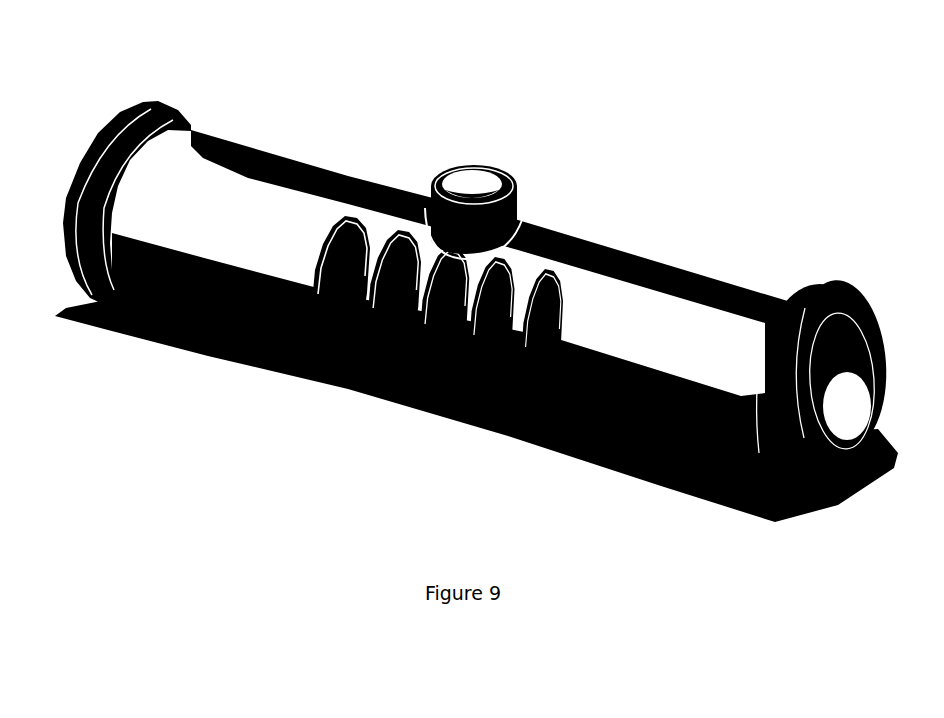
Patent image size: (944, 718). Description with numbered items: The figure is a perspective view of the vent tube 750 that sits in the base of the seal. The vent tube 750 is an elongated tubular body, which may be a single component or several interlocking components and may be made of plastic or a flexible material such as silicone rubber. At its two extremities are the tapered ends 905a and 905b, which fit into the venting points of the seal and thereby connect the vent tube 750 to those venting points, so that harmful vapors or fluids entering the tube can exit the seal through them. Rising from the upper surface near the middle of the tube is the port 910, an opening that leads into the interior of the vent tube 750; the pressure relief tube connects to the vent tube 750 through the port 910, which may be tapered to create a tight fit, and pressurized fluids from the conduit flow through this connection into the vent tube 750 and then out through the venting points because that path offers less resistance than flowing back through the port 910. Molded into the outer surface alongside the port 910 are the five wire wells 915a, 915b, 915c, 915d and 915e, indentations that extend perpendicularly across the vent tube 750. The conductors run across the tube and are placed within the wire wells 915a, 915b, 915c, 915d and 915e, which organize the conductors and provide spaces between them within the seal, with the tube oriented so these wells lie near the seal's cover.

The vent tube 750 is at (476, 37).
The tapered end 905a is at (103, 318).
The tapered end 905b is at (802, 490).
The port 910 is at (464, 157).
The wire well 915a is at (337, 368).
The wire well 915b is at (388, 378).
The wire well 915c is at (434, 393).
The wire well 915d is at (481, 403).
The wire well 915e is at (529, 418).